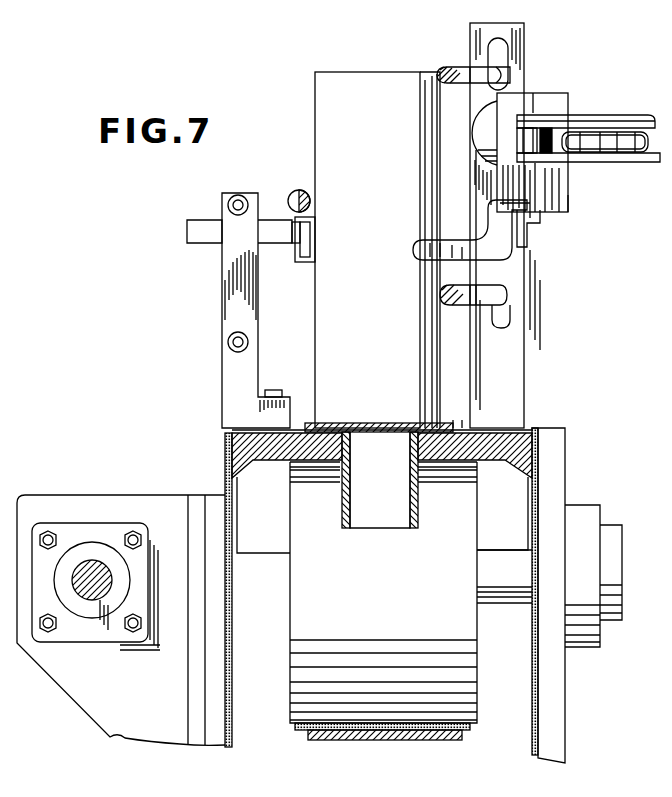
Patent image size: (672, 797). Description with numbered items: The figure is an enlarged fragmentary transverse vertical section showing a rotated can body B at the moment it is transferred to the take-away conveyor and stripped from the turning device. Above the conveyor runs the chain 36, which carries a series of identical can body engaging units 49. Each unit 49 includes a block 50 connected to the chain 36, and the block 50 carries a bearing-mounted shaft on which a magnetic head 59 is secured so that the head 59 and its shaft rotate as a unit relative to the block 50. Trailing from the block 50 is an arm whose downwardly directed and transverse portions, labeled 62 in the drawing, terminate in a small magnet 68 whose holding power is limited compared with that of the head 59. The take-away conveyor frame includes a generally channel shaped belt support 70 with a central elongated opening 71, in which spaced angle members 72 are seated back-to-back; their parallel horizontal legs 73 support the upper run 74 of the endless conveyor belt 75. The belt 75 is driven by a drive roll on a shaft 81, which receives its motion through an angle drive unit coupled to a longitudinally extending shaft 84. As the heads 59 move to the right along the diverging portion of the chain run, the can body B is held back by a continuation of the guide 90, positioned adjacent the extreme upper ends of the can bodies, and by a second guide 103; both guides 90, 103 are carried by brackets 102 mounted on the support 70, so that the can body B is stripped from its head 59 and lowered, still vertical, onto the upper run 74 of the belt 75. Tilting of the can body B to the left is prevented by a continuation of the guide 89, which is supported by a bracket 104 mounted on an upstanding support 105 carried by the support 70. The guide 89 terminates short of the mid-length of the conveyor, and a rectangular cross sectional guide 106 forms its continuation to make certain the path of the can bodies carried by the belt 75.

The can body B is at (362, 75).
The chain 36 is at (602, 115).
The can body engaging unit 49 is at (580, 203).
The block 50 is at (555, 94).
The head 59 is at (478, 136).
The bracket 62 is at (522, 242).
The small magnet 68 is at (414, 254).
The belt support 70 is at (540, 430).
The central elongated opening 71 is at (372, 440).
The angle members 72 is at (342, 498).
The horizontal legs 73 is at (300, 427).
The upper run 74 is at (366, 422).
The endless conveyor belt 75 is at (367, 742).
The shaft 81 is at (503, 600).
The longitudinally extending shaft 84 is at (103, 592).
The guide 89 is at (303, 190).
The guide 90 is at (439, 67).
The brackets 102 is at (522, 45).
The guide 103 is at (446, 306).
The bracket 104 is at (205, 238).
The upstanding support 105 is at (232, 300).
The rectangular cross sectional guide 106 is at (301, 265).